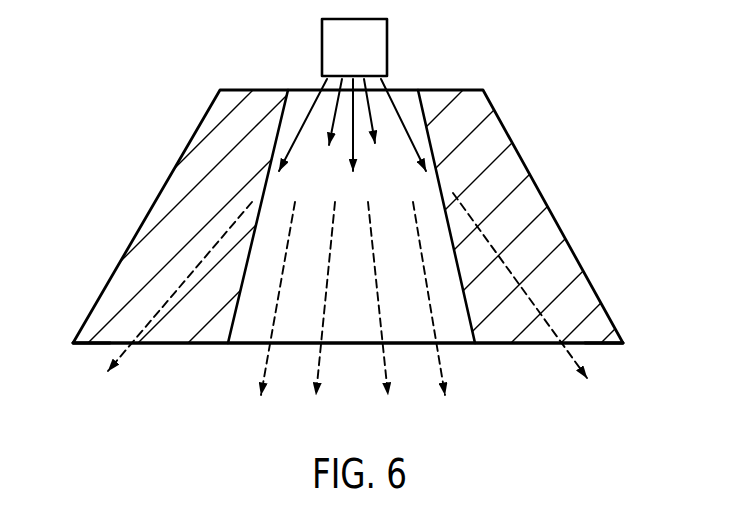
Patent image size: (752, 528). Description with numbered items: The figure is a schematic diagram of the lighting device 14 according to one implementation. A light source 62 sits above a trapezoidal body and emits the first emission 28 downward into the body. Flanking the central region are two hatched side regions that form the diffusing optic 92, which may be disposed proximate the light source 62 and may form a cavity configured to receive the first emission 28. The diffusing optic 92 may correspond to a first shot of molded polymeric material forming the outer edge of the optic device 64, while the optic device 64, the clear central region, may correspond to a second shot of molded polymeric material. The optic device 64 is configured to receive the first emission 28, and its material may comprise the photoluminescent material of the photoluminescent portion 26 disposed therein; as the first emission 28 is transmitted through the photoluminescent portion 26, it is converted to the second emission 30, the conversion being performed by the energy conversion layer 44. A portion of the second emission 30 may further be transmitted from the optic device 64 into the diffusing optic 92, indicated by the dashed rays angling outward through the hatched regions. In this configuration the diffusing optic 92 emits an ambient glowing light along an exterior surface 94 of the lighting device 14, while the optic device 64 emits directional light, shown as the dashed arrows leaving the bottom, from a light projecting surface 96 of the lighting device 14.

The lighting device 14 is at (511, 59).
The light source 62 is at (366, 56).
The first emission 28 is at (326, 111).
The diffusing optic 92 is at (192, 167).
The second emission 30 is at (300, 267).
The photoluminescent portion 26 is at (400, 262).
The optic device 64 is at (364, 260).
The light projecting surface 96 is at (357, 344).
The energy conversion layer 44 is at (102, 344).
The exterior surface 94 is at (592, 344).